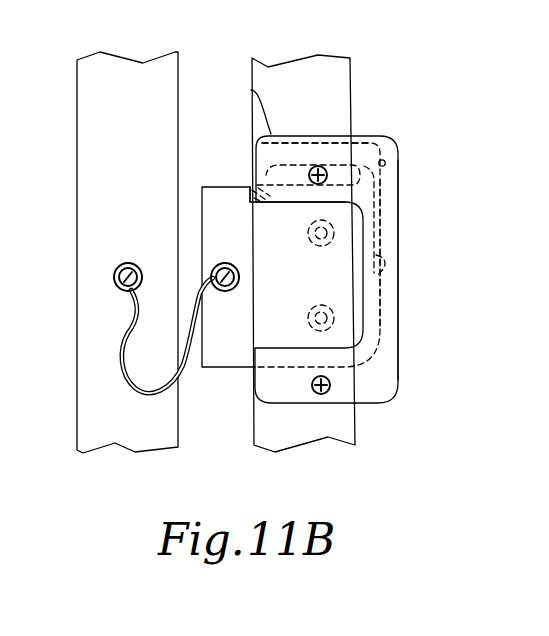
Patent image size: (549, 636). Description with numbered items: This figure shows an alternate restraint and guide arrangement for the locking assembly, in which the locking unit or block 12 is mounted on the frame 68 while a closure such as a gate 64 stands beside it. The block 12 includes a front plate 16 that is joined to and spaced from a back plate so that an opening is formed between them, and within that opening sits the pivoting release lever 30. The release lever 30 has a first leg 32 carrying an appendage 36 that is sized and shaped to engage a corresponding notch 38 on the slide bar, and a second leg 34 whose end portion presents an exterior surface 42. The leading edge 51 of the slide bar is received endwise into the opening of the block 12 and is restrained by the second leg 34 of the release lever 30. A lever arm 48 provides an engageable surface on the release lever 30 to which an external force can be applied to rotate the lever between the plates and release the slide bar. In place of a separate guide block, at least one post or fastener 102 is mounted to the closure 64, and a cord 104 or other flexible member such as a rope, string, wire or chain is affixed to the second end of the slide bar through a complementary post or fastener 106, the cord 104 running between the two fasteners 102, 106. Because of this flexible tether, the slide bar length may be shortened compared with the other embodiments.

The gate 64 is at (85, 117).
The frame 68 is at (317, 68).
The lever arm 48 is at (255, 113).
The front plate 16 is at (384, 390).
The locking unit 12 is at (405, 137).
The pivoting release lever 30 is at (319, 145).
The first leg 32 is at (273, 156).
The appendage 36 is at (255, 182).
The notch 38 is at (265, 205).
The second leg 34 is at (390, 193).
The exterior surface 42 is at (390, 258).
The leading edge 51 is at (390, 260).
The cord 104 is at (130, 387).
The fastener 102 is at (117, 267).
The complementary fastener 106 is at (239, 272).